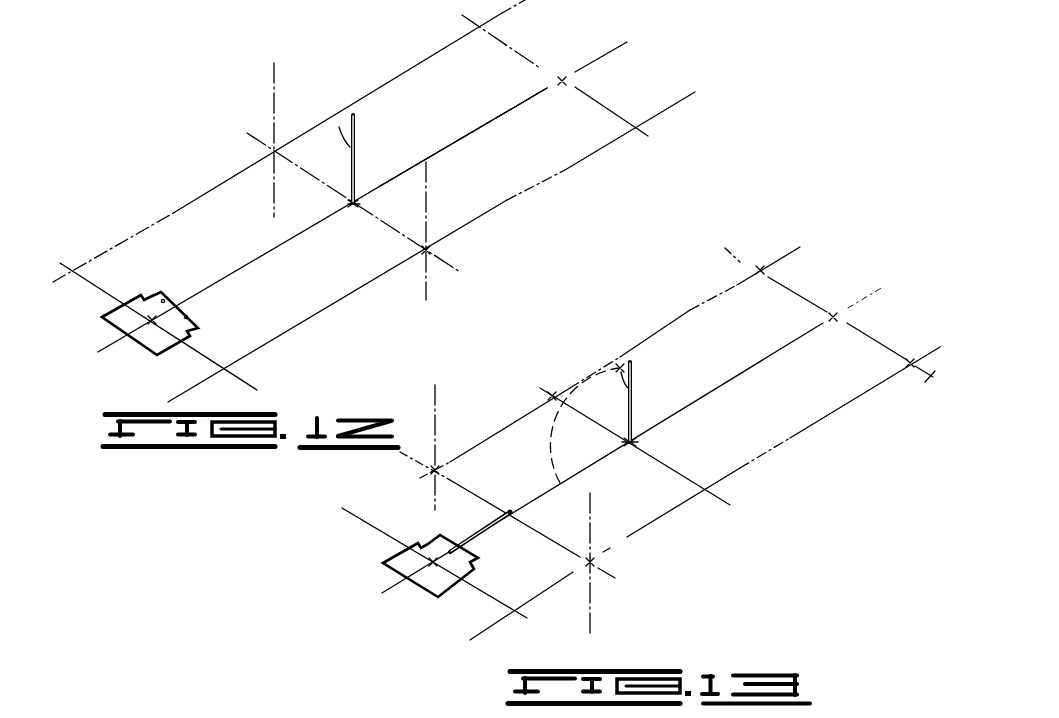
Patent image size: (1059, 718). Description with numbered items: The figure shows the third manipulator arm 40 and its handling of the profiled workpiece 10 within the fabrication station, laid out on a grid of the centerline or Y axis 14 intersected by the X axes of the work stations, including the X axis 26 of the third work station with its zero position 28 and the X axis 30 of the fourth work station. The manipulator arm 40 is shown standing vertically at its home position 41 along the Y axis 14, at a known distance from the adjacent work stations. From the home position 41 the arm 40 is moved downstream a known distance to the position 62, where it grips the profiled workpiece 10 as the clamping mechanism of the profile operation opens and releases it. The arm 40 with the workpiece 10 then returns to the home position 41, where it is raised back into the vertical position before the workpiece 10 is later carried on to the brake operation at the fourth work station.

In FIG. 12, the profiled workpiece 10 is at (197, 333).
In FIG. 13, the profiled workpiece 10 is at (432, 585).
In FIG. 12, the Y axis 14 is at (512, 110).
In FIG. 12, the X axis 26 is at (250, 380).
In FIG. 12, the zero position 28 is at (150, 325).
In FIG. 13, the zero position 28 is at (430, 560).
In FIG. 12, the X axis 30 is at (648, 136).
In FIG. 13, the X axis 30 is at (930, 377).
In FIG. 12, the third manipulator arm 40 is at (355, 128).
In FIG. 13, the third manipulator arm 40 is at (488, 527).
In FIG. 12, the home position 41 is at (359, 205).
In FIG. 13, the home position 41 is at (636, 442).
In FIG. 13, the position 62 is at (472, 490).